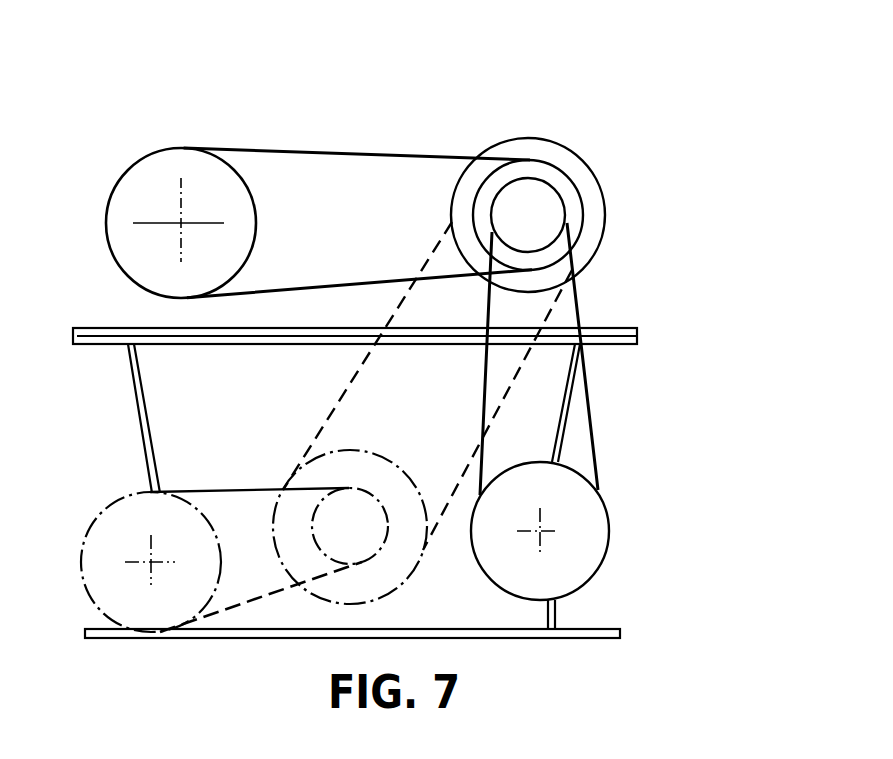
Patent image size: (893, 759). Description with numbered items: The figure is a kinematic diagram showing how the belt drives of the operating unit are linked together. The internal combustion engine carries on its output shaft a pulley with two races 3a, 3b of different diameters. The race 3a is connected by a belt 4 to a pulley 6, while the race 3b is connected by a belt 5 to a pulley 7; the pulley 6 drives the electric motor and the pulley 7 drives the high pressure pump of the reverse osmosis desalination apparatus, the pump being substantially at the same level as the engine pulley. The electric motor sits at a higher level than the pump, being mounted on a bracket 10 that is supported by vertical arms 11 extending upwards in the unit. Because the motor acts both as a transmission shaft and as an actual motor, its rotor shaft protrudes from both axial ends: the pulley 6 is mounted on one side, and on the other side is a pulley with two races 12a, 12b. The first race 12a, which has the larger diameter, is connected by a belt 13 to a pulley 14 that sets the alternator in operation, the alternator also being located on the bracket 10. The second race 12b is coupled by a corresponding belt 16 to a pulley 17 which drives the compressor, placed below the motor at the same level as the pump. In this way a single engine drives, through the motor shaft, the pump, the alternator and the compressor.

The race 3a is at (360, 465).
The race 3b is at (368, 537).
The belt 4 is at (338, 404).
The belt 5 is at (252, 597).
The pulley 6 is at (587, 248).
The pulley 7 is at (97, 535).
The bracket 10 is at (97, 328).
The vertical arms 11 is at (146, 432).
The first race 12a is at (578, 210).
The second race 12b is at (557, 235).
The belt 13 is at (312, 152).
The pulley 14 is at (148, 210).
The belt 16 is at (598, 470).
The pulley 17 is at (570, 550).